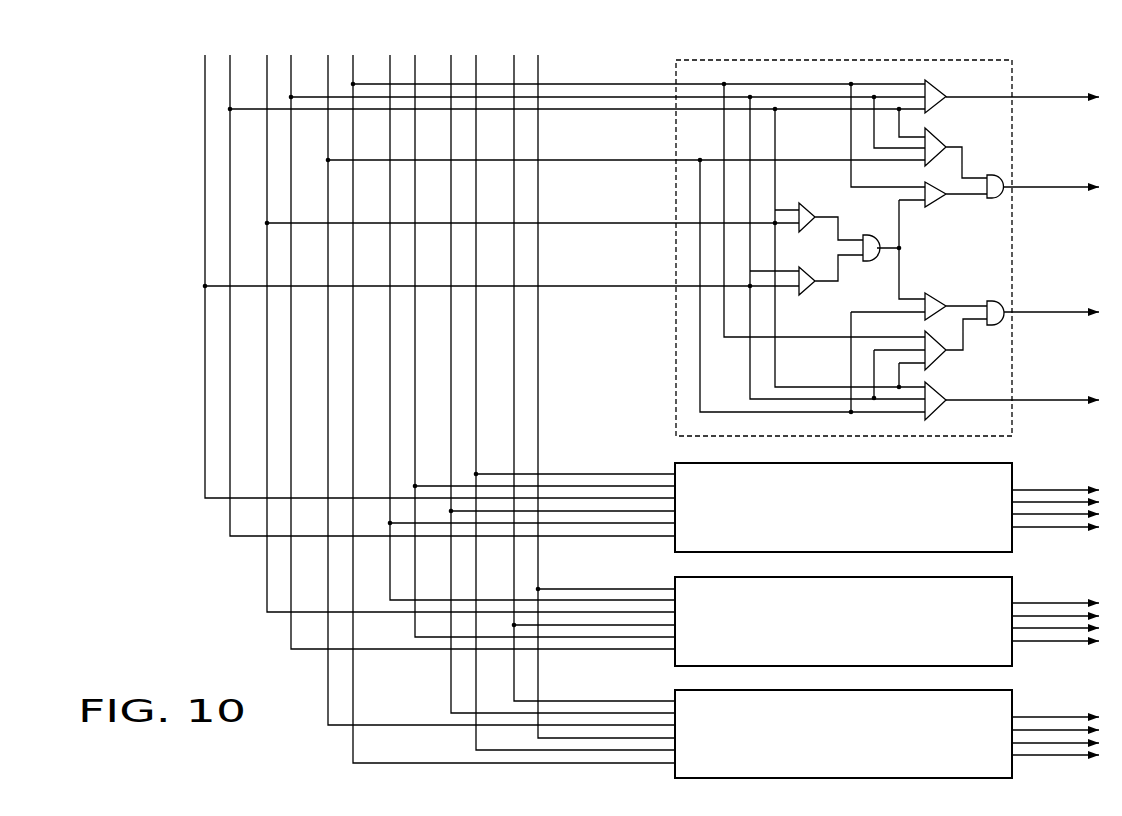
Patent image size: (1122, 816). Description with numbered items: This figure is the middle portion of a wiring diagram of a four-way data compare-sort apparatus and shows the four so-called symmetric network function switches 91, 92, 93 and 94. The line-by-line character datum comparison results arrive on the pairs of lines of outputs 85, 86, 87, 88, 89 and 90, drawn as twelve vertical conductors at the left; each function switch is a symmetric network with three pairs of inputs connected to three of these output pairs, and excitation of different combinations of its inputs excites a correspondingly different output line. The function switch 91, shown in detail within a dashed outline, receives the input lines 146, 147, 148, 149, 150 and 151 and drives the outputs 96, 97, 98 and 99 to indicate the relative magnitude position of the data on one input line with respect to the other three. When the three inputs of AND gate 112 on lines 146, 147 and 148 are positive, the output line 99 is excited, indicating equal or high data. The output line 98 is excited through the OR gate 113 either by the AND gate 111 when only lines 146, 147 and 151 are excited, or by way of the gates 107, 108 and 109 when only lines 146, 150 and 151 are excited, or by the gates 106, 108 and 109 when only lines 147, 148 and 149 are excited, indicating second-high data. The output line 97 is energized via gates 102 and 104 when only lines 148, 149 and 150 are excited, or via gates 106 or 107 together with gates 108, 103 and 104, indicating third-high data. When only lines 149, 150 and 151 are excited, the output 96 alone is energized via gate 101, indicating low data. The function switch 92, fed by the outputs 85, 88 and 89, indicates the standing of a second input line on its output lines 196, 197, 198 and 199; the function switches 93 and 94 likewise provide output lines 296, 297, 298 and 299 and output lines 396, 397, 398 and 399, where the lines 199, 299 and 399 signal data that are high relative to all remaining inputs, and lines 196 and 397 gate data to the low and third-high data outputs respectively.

The output 85 is at (234, 47).
The output 86 is at (295, 47).
The output 87 is at (325, 47).
The output 88 is at (387, 47).
The output 89 is at (448, 47).
The output 90 is at (542, 47).
The symmetric network function switch 91 is at (675, 355).
The symmetric network function switch 92 is at (946, 463).
The symmetric network function switch 93 is at (926, 577).
The symmetric network function switch 94 is at (921, 690).
The function switch output 96 is at (1065, 98).
The function switch output line 97 is at (1063, 187).
The function switch output line 98 is at (1066, 312).
The function switch output line 99 is at (1068, 400).
The gate 101 is at (937, 89).
The gate 102 is at (937, 139).
The gate 103 is at (934, 201).
The gate 104 is at (992, 176).
The gate 106 is at (808, 210).
The gate 107 is at (812, 265).
The gate 108 is at (868, 238).
The gate 109 is at (938, 291).
The AND gate 111 is at (936, 362).
The AND gate 112 is at (936, 407).
The OR gate 113 is at (993, 302).
The function switch input line 146 is at (612, 285).
The function switch input line 147 is at (610, 223).
The function switch input line 148 is at (608, 160).
The function switch input line 149 is at (640, 109).
The function switch input line 150 is at (587, 97).
The function switch input line 151 is at (644, 85).
The function switch output line 196 is at (1063, 490).
The function switch output line 197 is at (1068, 502).
The function switch output line 198 is at (1052, 514).
The function switch output line 199 is at (1074, 527).
The function switch output line 296 is at (1069, 603).
The function switch output line 297 is at (1055, 616).
The function switch output line 298 is at (1052, 628).
The function switch output line 299 is at (1074, 641).
The function switch output line 396 is at (1069, 717).
The function switch output line 397 is at (1055, 730).
The function switch output line 398 is at (1052, 743).
The function switch output line 399 is at (1074, 755).